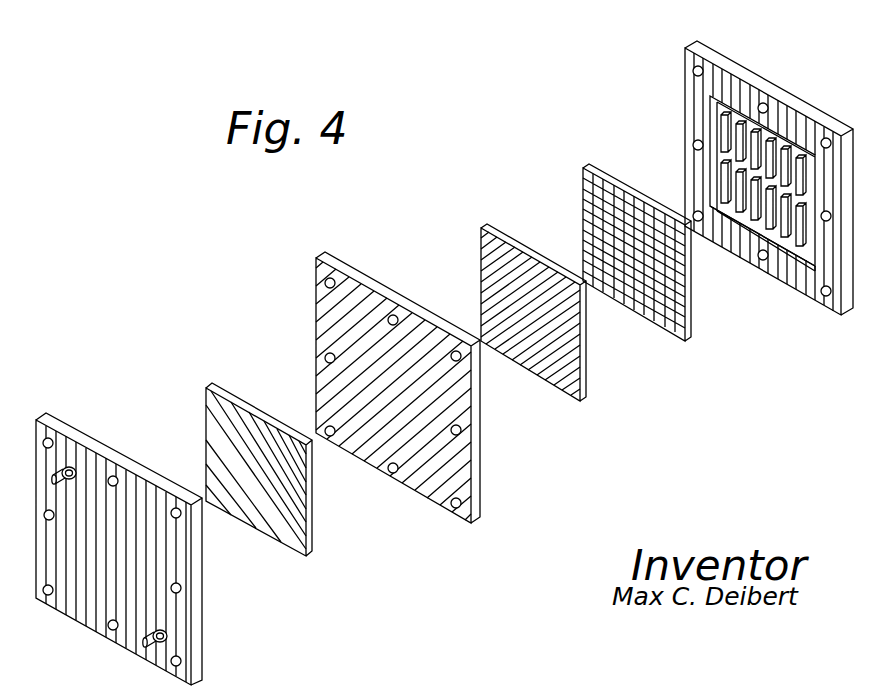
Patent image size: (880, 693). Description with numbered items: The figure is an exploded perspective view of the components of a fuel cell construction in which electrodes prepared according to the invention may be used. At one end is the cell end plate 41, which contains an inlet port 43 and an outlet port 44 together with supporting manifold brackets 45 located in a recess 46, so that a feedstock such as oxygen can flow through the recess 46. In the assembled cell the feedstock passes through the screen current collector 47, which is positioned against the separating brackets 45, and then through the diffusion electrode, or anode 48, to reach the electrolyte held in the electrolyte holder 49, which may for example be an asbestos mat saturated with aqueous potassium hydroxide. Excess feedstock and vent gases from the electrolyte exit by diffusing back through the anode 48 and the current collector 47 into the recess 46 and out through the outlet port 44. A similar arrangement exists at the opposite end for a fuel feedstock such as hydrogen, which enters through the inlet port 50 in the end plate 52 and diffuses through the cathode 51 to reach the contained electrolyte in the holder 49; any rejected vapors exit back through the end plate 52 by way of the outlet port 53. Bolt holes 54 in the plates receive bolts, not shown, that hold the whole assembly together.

The cell end plate 41 is at (752, 72).
The inlet port 43 is at (712, 92).
The outlet port 44 is at (803, 252).
The supporting manifold brackets 45 is at (777, 141).
The recess 46 is at (742, 218).
The screen current collector 47 is at (585, 160).
The diffusion electrode (anode) 48 is at (480, 220).
The electrolyte holder 49 is at (406, 302).
The inlet port 50 is at (65, 461).
The cathode 51 is at (232, 396).
The end plate 52 is at (117, 452).
The outlet port 53 is at (143, 643).
The bolt holes 54 is at (687, 135).